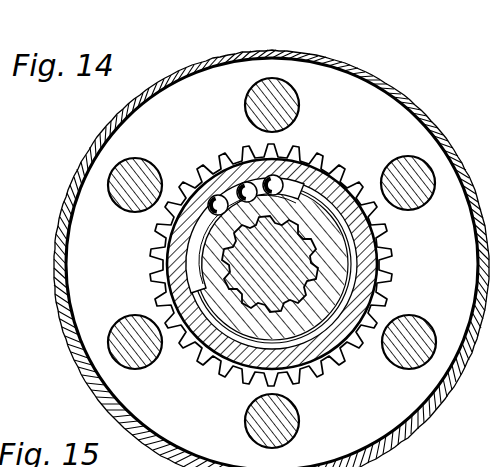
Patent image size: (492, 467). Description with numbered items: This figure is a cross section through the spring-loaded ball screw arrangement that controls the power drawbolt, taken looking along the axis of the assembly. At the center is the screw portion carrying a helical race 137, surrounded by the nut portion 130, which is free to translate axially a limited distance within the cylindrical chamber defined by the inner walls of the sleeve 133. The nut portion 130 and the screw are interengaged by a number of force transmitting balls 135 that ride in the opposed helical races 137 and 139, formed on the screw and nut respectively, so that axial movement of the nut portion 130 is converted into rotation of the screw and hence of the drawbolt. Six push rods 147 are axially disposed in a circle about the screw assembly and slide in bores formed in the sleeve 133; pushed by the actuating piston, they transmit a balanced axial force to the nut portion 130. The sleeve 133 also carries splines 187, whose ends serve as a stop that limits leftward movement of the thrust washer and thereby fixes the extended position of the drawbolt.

The nut portion 130 is at (217, 366).
The sleeve 133 is at (100, 132).
The force transmitting balls 135 is at (247, 182).
The helical race 137 is at (205, 250).
The helical race 139 is at (188, 258).
The push rods 147 is at (144, 318).
The splines 187 is at (311, 359).